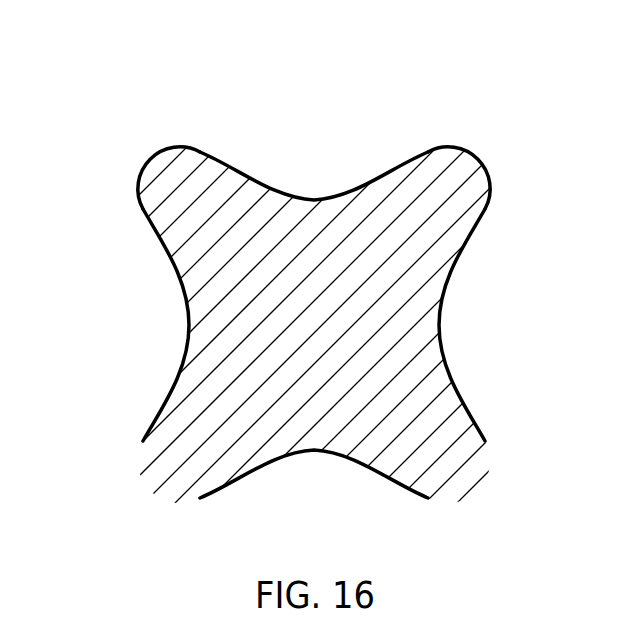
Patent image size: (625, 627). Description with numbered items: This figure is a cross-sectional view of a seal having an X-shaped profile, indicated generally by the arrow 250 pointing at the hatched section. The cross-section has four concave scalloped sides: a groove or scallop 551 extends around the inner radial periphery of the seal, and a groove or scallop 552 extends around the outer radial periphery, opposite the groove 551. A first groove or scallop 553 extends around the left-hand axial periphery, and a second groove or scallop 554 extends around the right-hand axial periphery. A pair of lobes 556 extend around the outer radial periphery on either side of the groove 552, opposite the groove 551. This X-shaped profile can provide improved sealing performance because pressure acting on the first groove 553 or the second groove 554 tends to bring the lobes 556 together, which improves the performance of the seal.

The support member cross-section 250 is at (312, 291).
The groove or scallop 551 is at (317, 453).
The groove or scallop 552 is at (308, 198).
The first groove or scallop 553 is at (188, 316).
The second groove or scallop 554 is at (442, 322).
The lobes 556 is at (163, 152).